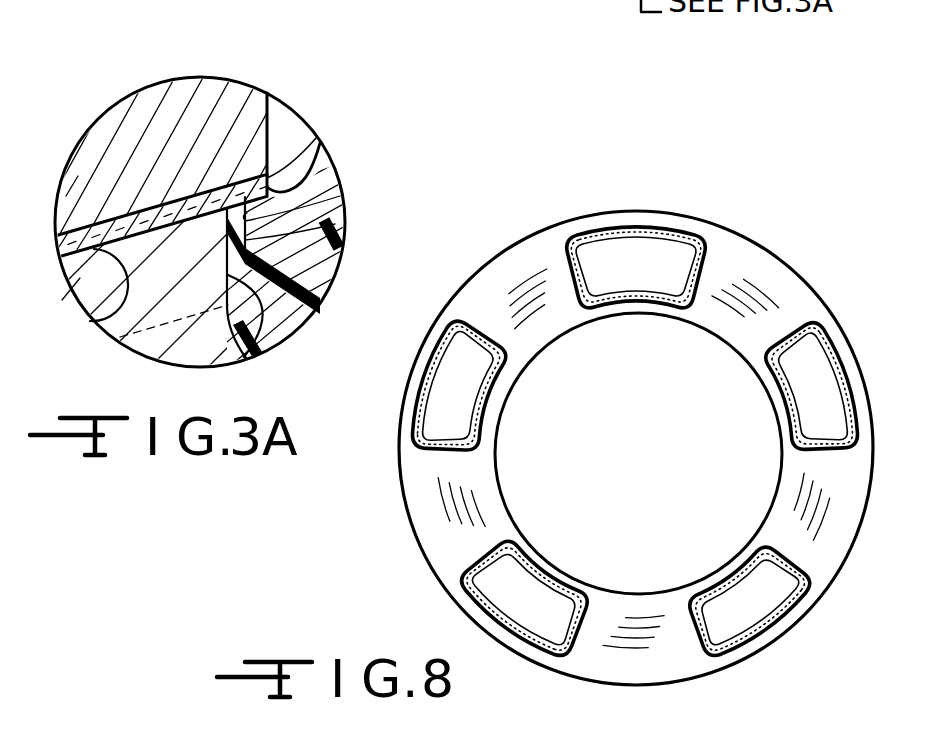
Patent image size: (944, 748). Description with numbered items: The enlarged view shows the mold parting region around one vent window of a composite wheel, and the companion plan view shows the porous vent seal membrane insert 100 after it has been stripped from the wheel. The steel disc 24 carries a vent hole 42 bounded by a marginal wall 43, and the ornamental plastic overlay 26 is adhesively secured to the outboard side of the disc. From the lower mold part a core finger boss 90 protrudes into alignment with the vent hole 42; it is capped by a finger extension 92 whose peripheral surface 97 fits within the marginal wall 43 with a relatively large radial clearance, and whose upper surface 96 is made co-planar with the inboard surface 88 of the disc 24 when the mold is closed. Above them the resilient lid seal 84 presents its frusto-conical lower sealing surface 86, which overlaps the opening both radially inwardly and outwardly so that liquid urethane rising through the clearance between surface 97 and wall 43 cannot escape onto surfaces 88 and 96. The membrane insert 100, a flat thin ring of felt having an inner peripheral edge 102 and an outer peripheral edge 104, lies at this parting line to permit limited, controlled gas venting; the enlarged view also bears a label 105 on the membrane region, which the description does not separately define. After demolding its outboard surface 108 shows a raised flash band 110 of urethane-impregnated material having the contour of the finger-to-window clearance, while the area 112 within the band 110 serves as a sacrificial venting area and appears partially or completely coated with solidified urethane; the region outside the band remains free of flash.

In FIG. 3A, the central steel disc 24 is at (338, 156).
In FIG. 3A, the ornamental plastic overlay 26 is at (322, 265).
In FIG. 3A, the disc vent hole 42 is at (338, 208).
In FIG. 3A, the marginal wall of disc opening 43 is at (335, 224).
In FIG. 3A, the lid seal 84 is at (253, 120).
In FIG. 3A, the lower sealing surface of lid seal 86 is at (72, 188).
In FIG. 3A, the inboard surface of disc 88 is at (318, 180).
In FIG. 3A, the core finger boss 90 is at (182, 343).
In FIG. 3A, the finger extension 92 is at (88, 292).
In FIG. 3A, the upper surface of finger extension 96 is at (188, 224).
In FIG. 3A, the finger extension peripheral surface 97 is at (262, 350).
In FIG. 3A, the vent seal membrane insert 100 is at (168, 200).
In FIG. 8, the vent seal membrane insert 100 is at (794, 255).
In FIG. 8, the inner peripheral edge 102 is at (572, 320).
In FIG. 3A, the outer peripheral edge 104 is at (318, 140).
In FIG. 8, the outer peripheral edge 104 is at (480, 270).
In FIG. 3A, the seal layer 105 is at (160, 193).
In FIG. 3A, the outboard surface of membrane 108 is at (91, 322).
In FIG. 8, the outboard surface of membrane 108 is at (542, 255).
In FIG. 8, the flash band 110 is at (803, 605).
In FIG. 8, the area within flash band 112 is at (747, 607).